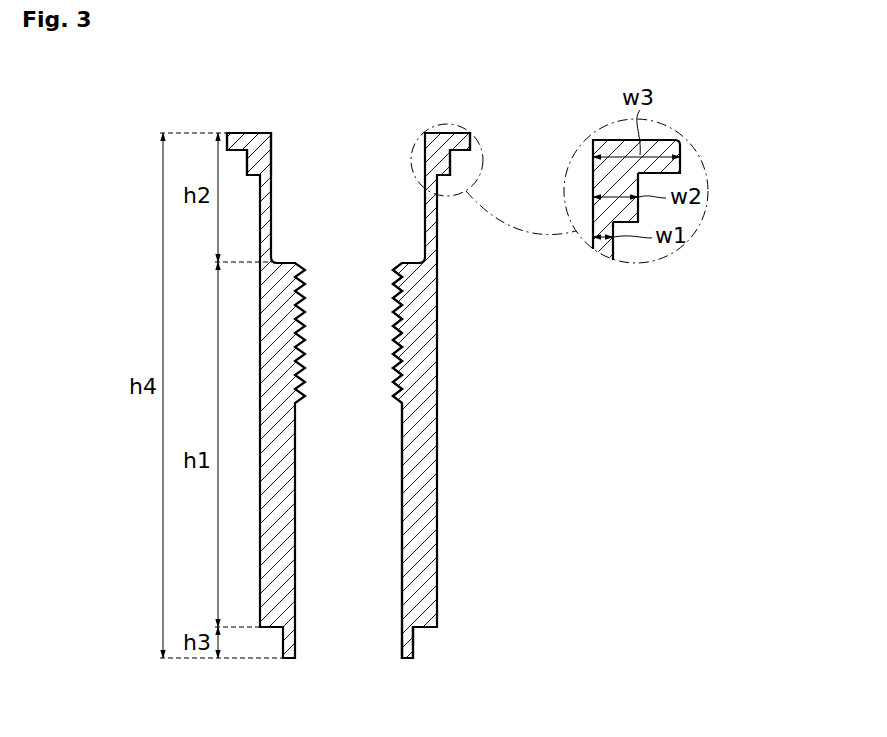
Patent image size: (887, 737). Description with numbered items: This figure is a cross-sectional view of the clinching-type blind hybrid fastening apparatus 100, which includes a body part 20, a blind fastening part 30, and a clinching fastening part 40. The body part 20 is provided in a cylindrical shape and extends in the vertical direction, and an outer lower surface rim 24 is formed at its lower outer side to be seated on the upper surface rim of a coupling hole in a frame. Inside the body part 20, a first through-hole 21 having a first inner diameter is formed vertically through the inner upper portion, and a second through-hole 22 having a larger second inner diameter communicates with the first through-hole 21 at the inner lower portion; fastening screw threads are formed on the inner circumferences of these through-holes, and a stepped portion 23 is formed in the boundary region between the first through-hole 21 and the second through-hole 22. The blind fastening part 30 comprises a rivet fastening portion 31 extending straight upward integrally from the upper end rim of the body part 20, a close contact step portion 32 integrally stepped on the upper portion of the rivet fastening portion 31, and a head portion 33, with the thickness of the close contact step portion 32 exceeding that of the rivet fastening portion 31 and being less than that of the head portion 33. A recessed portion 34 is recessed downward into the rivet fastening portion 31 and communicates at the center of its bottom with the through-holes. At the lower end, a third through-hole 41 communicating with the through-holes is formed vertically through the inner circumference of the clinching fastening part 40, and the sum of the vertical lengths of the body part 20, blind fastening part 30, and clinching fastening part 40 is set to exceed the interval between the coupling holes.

The clinching-type blind hybrid fastening apparatus 100 is at (150, 103).
The body part 20 is at (442, 368).
The first through-hole 21 is at (392, 275).
The second through-hole 22 is at (402, 510).
The stepped portion 23 is at (400, 405).
The outer lower surface rim 24 is at (421, 628).
The blind fastening part 30 is at (473, 132).
The rivet fastening portion 31 is at (616, 250).
The close contact step portion 32 is at (633, 214).
The head portion 33 is at (681, 143).
The recessed portion 34 is at (273, 169).
The clinching fastening part 40 is at (419, 652).
The third through-hole 41 is at (398, 641).